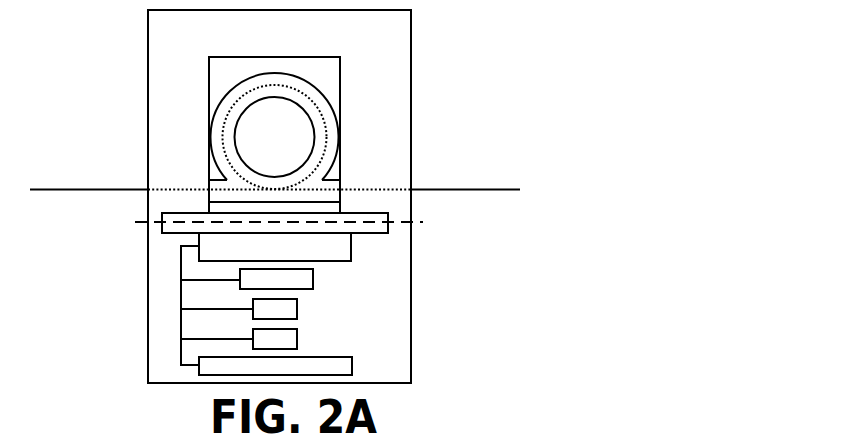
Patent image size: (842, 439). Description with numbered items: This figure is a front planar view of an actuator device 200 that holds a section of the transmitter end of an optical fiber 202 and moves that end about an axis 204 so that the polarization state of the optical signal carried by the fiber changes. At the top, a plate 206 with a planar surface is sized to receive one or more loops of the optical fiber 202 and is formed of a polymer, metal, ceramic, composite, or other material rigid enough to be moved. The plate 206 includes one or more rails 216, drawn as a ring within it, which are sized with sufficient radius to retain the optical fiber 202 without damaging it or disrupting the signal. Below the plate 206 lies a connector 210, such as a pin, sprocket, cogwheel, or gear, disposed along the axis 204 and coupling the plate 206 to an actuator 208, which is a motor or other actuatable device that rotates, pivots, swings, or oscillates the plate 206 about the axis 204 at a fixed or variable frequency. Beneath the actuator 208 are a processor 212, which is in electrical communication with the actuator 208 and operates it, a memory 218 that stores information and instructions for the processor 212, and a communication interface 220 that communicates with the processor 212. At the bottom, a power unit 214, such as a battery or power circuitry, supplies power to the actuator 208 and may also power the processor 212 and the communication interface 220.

The actuator device 200 is at (437, 62).
The optical fiber 202 is at (466, 189).
The axis 204 is at (130, 222).
The plate 206 is at (340, 97).
The actuator 208 is at (351, 247).
The connector 210 is at (385, 213).
The processor 212 is at (313, 277).
The power unit 214 is at (352, 365).
The rails 216 is at (235, 87).
The memory 218 is at (297, 307).
The communication interface 220 is at (297, 337).